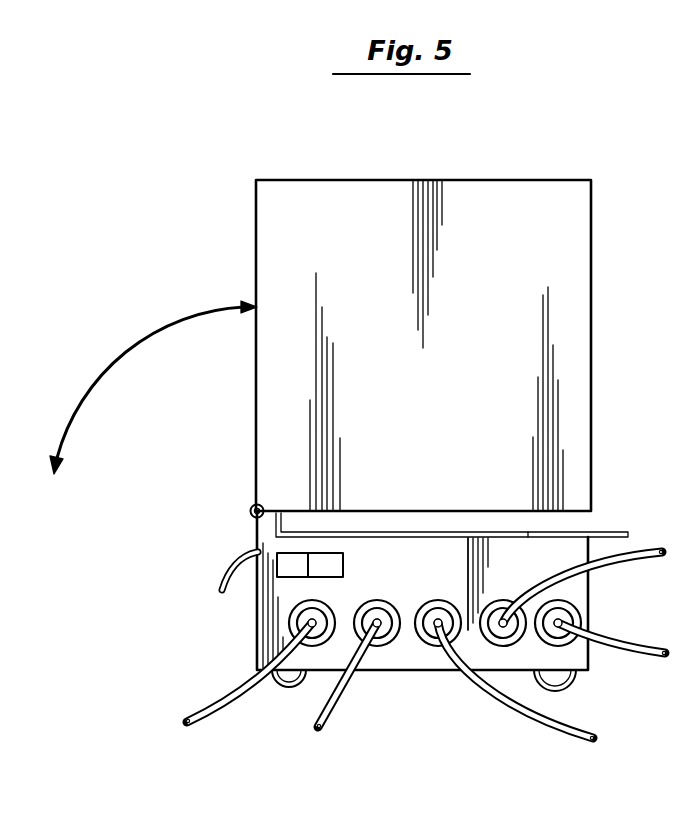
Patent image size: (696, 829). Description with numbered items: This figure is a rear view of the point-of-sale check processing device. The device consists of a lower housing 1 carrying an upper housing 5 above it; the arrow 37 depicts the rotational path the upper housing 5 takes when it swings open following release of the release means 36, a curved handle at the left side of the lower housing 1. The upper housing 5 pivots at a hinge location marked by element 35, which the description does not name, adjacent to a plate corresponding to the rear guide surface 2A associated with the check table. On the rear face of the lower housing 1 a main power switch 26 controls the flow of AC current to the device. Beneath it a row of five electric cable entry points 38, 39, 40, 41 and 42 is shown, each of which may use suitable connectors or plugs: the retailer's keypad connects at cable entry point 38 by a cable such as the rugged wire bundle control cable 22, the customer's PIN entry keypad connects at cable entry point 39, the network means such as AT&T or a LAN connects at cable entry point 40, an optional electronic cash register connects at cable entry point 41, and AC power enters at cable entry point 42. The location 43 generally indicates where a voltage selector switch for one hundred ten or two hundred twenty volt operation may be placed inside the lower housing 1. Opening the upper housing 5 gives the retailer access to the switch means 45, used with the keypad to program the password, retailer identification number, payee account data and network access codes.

The lower housing 1 is at (417, 650).
The upper housing 5 is at (364, 253).
The rear guide surface 2A is at (280, 511).
The control cable 22 is at (241, 693).
The main power switch 26 is at (290, 567).
The pivot pin 35 is at (249, 503).
The release means 36 is at (238, 562).
The arrow 37 is at (164, 327).
The cable entry point 38 is at (322, 613).
The cable entry point 39 is at (377, 609).
The cable entry point 40 is at (440, 610).
The cable entry point 41 is at (495, 612).
The cable entry point 42 is at (569, 608).
The voltage selector switch location 43 is at (511, 545).
The switch means 45 is at (535, 545).